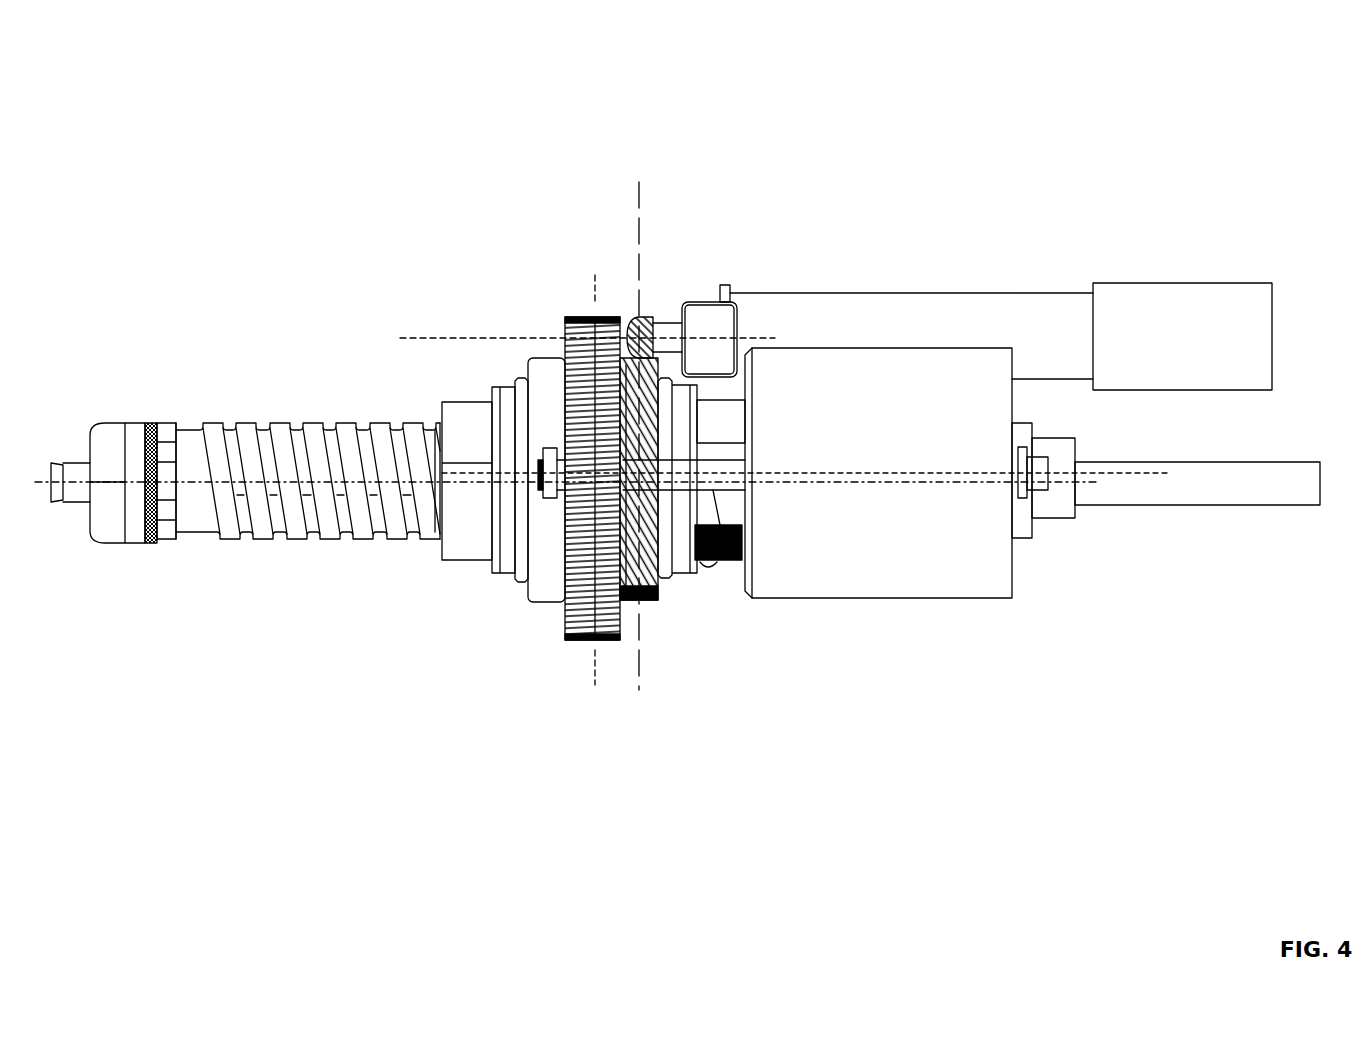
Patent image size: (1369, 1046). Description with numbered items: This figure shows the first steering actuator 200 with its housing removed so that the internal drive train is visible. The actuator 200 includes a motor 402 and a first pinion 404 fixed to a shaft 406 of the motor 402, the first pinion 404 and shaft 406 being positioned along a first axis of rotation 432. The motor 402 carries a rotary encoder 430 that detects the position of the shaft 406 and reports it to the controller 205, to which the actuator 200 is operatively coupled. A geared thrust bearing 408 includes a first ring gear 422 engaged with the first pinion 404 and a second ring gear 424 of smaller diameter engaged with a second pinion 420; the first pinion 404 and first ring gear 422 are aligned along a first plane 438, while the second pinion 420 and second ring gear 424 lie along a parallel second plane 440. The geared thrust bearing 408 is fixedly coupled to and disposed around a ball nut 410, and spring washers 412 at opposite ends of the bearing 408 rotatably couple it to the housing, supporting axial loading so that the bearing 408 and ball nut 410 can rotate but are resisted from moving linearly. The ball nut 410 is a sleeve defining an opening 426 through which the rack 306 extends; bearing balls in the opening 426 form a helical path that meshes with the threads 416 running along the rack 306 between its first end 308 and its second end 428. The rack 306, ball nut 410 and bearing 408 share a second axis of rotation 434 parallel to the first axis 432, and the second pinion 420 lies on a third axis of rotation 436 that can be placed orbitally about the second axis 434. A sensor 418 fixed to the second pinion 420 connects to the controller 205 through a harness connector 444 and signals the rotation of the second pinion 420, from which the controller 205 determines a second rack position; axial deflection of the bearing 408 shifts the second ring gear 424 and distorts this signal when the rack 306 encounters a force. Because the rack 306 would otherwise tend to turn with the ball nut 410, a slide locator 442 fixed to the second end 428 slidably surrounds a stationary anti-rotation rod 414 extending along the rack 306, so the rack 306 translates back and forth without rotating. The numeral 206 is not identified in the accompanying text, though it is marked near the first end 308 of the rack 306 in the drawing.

The first steering actuator 200 is at (1088, 74).
The controller 205 is at (1195, 283).
The output shaft end 206 is at (83, 503).
The rack 306 is at (308, 483).
The first end of the rack 308 is at (112, 425).
The motor 402 is at (797, 600).
The first pinion 404 is at (561, 505).
The shaft of the motor 406 is at (727, 562).
The geared thrust bearing 408 is at (496, 388).
The ball nut 410 is at (452, 562).
The spring washers 412 is at (495, 575).
The anti-rotation rod 414 is at (1210, 466).
The threads 416 is at (276, 533).
The sensor 418 is at (742, 330).
The second pinion 420 is at (648, 318).
The first ring gear 422 is at (580, 642).
The second ring gear 424 is at (672, 603).
The opening 426 is at (440, 412).
The second end of the rack 428 is at (1015, 425).
The rotary encoder 430 is at (990, 578).
The first axis of rotation 432 is at (840, 476).
The second axis of rotation 434 is at (900, 484).
The third axis of rotation 436 is at (405, 338).
The first plane 438 is at (594, 297).
The second plane 440 is at (637, 204).
The slide locator 442 is at (1050, 520).
The harness connector 444 is at (732, 288).